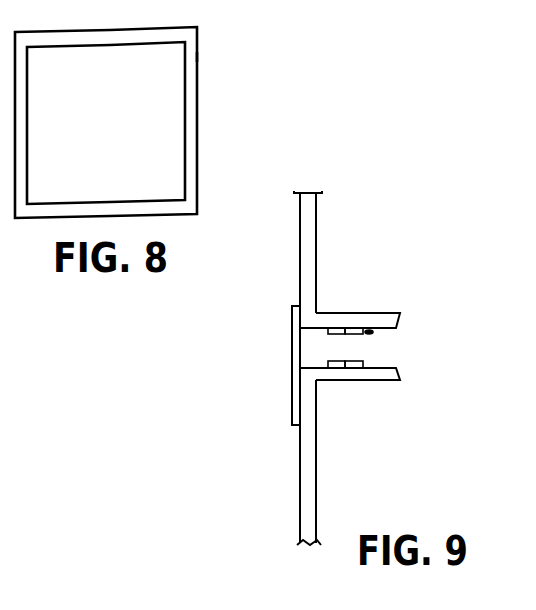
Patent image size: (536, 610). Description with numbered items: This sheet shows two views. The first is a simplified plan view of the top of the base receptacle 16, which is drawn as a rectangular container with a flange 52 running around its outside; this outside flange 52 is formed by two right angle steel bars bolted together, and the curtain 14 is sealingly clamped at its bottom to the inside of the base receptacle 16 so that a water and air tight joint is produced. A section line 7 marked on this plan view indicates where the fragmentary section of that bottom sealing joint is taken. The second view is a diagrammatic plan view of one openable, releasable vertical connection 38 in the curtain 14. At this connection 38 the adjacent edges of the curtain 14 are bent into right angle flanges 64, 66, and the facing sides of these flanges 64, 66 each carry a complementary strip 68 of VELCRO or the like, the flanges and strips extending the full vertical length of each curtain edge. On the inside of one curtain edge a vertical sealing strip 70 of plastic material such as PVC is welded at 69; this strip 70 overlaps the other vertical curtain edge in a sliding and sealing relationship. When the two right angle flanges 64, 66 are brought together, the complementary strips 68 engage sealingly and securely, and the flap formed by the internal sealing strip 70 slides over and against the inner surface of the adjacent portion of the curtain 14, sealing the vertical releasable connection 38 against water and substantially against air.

In FIG. 8, the base receptacle 16 is at (96, 126).
In FIG. 8, the flange 52 is at (195, 57).
In FIG. 8, the section line 7— 7 is at (176, 128).
In FIG. 9, the curtain 14 is at (303, 228).
In FIG. 9, the releasable vertical connection 38 is at (260, 329).
In FIG. 9, the vertical sealing strip 70 is at (298, 352).
In FIG. 9, the weld 69 is at (304, 428).
In FIG. 9, the right angle flange 64 is at (352, 319).
In FIG. 9, the right angle flange 66 is at (356, 379).
In FIG. 9, the complementary strip 68 is at (366, 362).